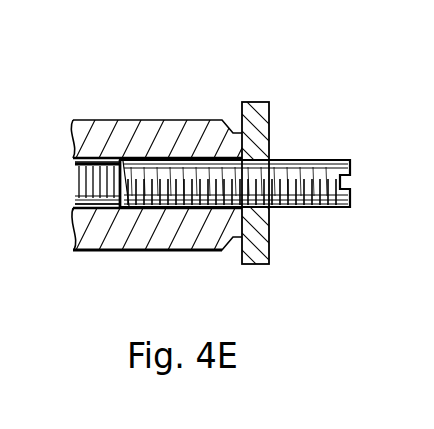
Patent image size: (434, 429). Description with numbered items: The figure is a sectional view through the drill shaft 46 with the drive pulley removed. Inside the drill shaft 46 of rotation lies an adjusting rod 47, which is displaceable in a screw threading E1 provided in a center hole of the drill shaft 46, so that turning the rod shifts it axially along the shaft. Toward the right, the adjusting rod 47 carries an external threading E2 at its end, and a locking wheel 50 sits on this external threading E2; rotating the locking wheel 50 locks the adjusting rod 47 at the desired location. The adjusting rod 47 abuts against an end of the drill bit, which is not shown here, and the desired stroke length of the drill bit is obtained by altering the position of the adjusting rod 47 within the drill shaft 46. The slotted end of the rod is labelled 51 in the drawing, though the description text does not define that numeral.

The drill shaft 46 is at (88, 120).
The adjusting rod 47 is at (78, 198).
The locking wheel 50 is at (250, 102).
The threaded rod / screw 51 is at (325, 158).
The screw threading E1 is at (141, 120).
The external threading E2 is at (287, 158).